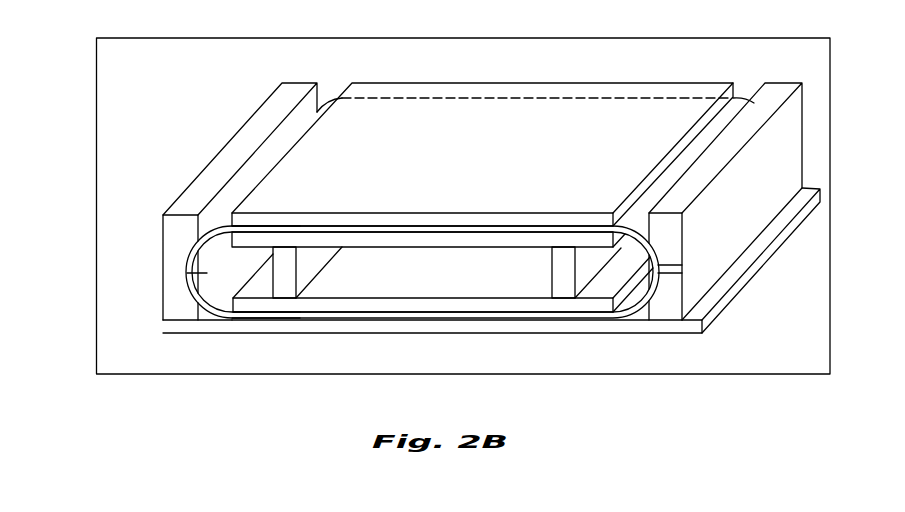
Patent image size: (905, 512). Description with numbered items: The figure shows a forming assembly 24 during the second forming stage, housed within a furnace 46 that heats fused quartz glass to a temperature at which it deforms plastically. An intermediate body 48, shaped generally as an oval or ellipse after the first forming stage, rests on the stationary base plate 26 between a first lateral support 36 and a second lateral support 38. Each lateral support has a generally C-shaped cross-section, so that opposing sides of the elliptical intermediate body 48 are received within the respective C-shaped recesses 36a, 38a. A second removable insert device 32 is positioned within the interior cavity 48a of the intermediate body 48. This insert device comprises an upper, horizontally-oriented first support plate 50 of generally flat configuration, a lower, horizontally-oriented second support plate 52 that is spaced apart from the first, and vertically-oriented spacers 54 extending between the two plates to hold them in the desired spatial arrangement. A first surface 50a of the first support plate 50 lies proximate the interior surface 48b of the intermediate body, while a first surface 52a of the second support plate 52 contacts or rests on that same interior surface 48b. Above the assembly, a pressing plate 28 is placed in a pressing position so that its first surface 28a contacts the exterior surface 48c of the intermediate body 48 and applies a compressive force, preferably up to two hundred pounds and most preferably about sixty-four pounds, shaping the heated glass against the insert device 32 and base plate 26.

The forming assembly 24 is at (170, 92).
The base plate 26 is at (723, 302).
The pressing plate 28 is at (609, 100).
The first surface of the pressing plate 28a is at (600, 226).
The second removable insert device 32 is at (248, 306).
The first lateral support 36 is at (253, 135).
The C-shaped recess of the first lateral support 36a is at (165, 319).
The second lateral support 38 is at (667, 305).
The C-shaped recess of the second lateral support 38a is at (683, 266).
The furnace 46 is at (96, 122).
The intermediate body 48 is at (382, 248).
The interior cavity 48a is at (196, 289).
The interior surface of the intermediate body 48b is at (187, 258).
The exterior surface of the intermediate body 48c is at (192, 267).
The first support plate 50 is at (207, 273).
The first surface of the first support plate 50a is at (236, 226).
The second support plate 52 is at (544, 300).
The first surface of the second support plate 52a is at (270, 313).
The spacers 54 is at (283, 268).